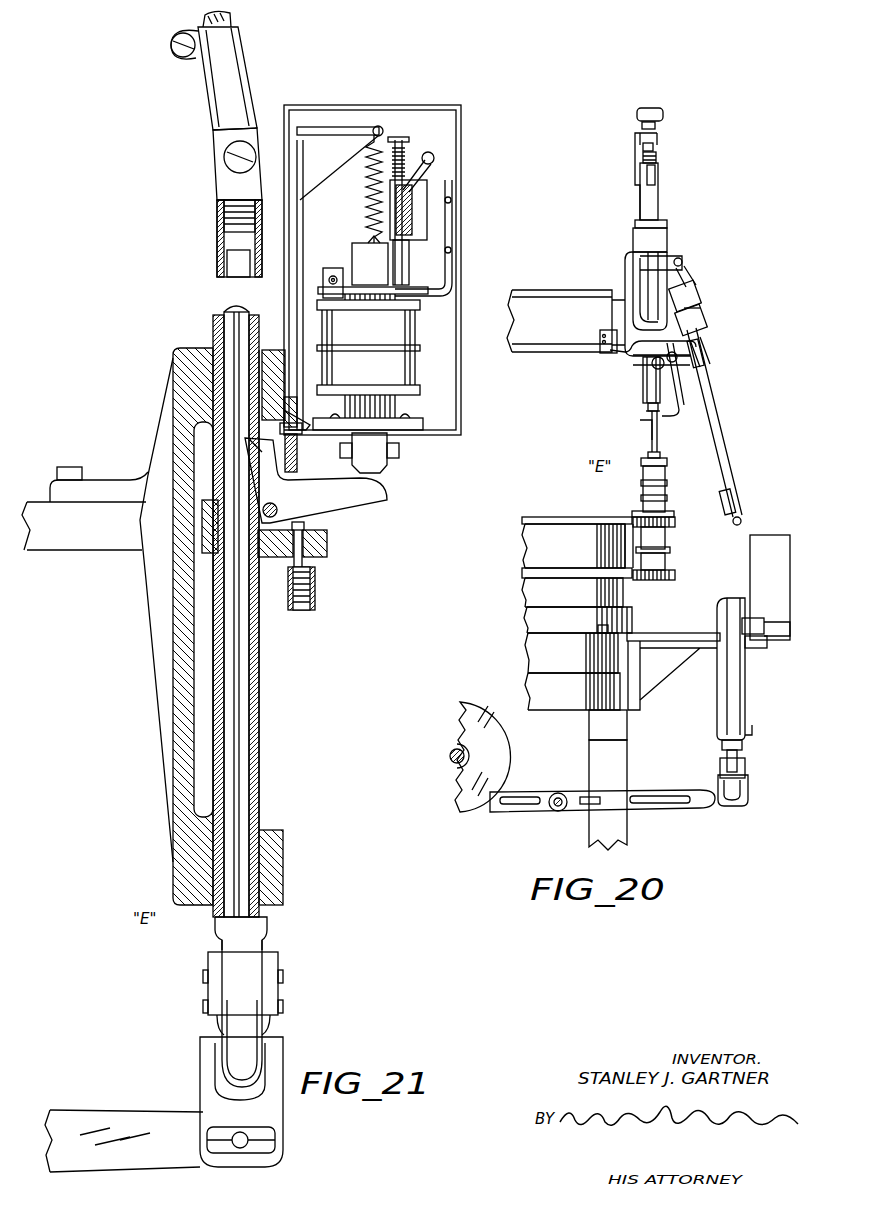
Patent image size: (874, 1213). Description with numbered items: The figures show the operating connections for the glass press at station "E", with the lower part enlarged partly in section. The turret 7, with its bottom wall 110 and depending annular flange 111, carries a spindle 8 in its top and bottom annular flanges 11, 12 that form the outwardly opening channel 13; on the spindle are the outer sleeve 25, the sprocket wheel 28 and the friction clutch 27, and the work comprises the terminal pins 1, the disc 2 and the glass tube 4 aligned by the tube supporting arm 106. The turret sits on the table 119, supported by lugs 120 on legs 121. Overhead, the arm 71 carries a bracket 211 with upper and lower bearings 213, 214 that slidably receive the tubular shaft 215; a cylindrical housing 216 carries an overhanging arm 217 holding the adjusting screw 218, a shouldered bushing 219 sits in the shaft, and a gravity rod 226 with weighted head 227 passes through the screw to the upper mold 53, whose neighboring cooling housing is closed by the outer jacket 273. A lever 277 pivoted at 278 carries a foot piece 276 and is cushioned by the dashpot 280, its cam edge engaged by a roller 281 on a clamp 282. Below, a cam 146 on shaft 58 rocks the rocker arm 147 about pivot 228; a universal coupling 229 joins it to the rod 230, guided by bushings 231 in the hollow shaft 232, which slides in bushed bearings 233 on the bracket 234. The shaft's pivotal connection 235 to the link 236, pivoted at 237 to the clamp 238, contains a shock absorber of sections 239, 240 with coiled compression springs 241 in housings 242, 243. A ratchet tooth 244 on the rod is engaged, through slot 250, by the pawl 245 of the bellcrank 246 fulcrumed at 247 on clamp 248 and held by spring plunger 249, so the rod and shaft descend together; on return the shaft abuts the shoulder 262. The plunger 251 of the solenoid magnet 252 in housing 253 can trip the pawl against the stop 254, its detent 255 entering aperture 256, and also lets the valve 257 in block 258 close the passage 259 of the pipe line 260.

In FIG. 20, the terminal pins 1 is at (660, 455).
In FIG. 20, the disc 2 is at (668, 462).
In FIG. 20, the glass tube 4 is at (658, 432).
In FIG. 20, the turret 7 is at (522, 566).
In FIG. 20, the spindle 8 is at (666, 498).
In FIG. 20, the top annular flange 11 is at (680, 526).
In FIG. 20, the bottom annular flange 12 is at (680, 584).
In FIG. 20, the channel 13 is at (631, 548).
In FIG. 20, the outer sleeve 25 is at (666, 540).
In FIG. 20, the friction clutch 27 is at (668, 568).
In FIG. 20, the sprocket wheel 28 is at (672, 553).
In FIG. 20, the upper mold 53 is at (648, 416).
In FIG. 20, the shaft 58 is at (450, 758).
In FIG. 20, the arm 71 is at (556, 344).
In FIG. 20, the tube supporting arm 106 is at (641, 420).
In FIG. 20, the bottom wall 110 is at (524, 540).
In FIG. 20, the depending annular flange 111 is at (528, 617).
In FIG. 20, the table 119 is at (530, 657).
In FIG. 20, the lugs 120 is at (592, 726).
In FIG. 20, the legs 121 is at (592, 755).
In FIG. 20, the cams 146 is at (460, 798).
In FIG. 21, the rocker arm 147 is at (138, 1110).
In FIG. 20, the rocker arm 147 is at (672, 812).
In FIG. 20, the bracket 211 is at (642, 245).
In FIG. 20, the upper bearing 213 is at (640, 232).
In FIG. 20, the lower bearing 214 is at (630, 330).
In FIG. 20, the tubular shaft 215 is at (645, 280).
In FIG. 20, the cylindrical housing 216 is at (642, 208).
In FIG. 20, the overhanging arm 217 is at (658, 140).
In FIG. 20, the adjusting screw 218 is at (657, 127).
In FIG. 20, the shouldered bushing 219 is at (658, 164).
In FIG. 20, the rod 226 is at (656, 150).
In FIG. 20, the weighted head 227 is at (666, 116).
In FIG. 20, the pivot 228 is at (553, 812).
In FIG. 21, the universal coupling 229 is at (207, 988).
In FIG. 20, the universal coupling 229 is at (748, 772).
In FIG. 21, the rod 230 is at (248, 672).
In FIG. 20, the rod 230 is at (728, 762).
In FIG. 21, the bushings 231 is at (216, 322).
In FIG. 21, the hollow shaft 232 is at (217, 278).
In FIG. 20, the hollow shaft 232 is at (741, 700).
In FIG. 21, the bushed bearings 233 is at (190, 360).
In FIG. 20, the bushed bearings 233 is at (718, 612).
In FIG. 21, the bracket 234 is at (122, 552).
In FIG. 20, the bracket 234 is at (645, 640).
In FIG. 21, the pivotal connection 235 is at (222, 158).
In FIG. 20, the pivotal connection 235 is at (742, 521).
In FIG. 21, the link 236 is at (236, 47).
In FIG. 20, the link 236 is at (722, 436).
In FIG. 20, the pivotal connection 237 is at (682, 262).
In FIG. 20, the clamp 238 is at (680, 258).
In FIG. 20, the link section 239 is at (693, 284).
In FIG. 20, the link section 240 is at (706, 342).
In FIG. 20, the coiled compression springs 241 is at (704, 311).
In FIG. 20, the spring housing 242 is at (700, 296).
In FIG. 20, the spring housing 243 is at (706, 325).
In FIG. 21, the ratchet tooth 244 is at (255, 445).
In FIG. 21, the pawl 245 is at (254, 500).
In FIG. 20, the pawl 245 is at (728, 648).
In FIG. 21, the bellcrank 246 is at (348, 510).
In FIG. 20, the bellcrank 246 is at (760, 648).
In FIG. 21, the fulcrum 247 is at (286, 509).
In FIG. 21, the clamp 248 is at (328, 548).
In FIG. 20, the clamp 248 is at (730, 662).
In FIG. 21, the spring plunger 249 is at (306, 565).
In FIG. 21, the slot 250 is at (165, 510).
In FIG. 21, the plunger 251 is at (386, 466).
In FIG. 20, the plunger 251 is at (782, 632).
In FIG. 21, the solenoid magnet 252 is at (412, 374).
In FIG. 21, the housing 253 is at (461, 422).
In FIG. 20, the housing 253 is at (793, 540).
In FIG. 21, the stop 254 is at (297, 462).
In FIG. 20, the stop 254 is at (754, 618).
In FIG. 21, the detent 255 is at (292, 420).
In FIG. 21, the aperture 256 is at (292, 438).
In FIG. 21, the valve 257 is at (420, 196).
In FIG. 21, the block 258 is at (430, 216).
In FIG. 21, the passage 259 is at (372, 212).
In FIG. 21, the pipe line 260 is at (434, 170).
In FIG. 21, the shoulder 262 is at (268, 925).
In FIG. 20, the shoulder 262 is at (722, 745).
In FIG. 20, the outer jacket 273 is at (648, 406).
In FIG. 20, the foot piece 276 is at (672, 406).
In FIG. 20, the lever 277 is at (666, 378).
In FIG. 20, the pivot 278 is at (678, 357).
In FIG. 20, the dashpot 280 is at (606, 355).
In FIG. 20, the roller 281 is at (648, 383).
In FIG. 20, the clamp 282 is at (652, 366).